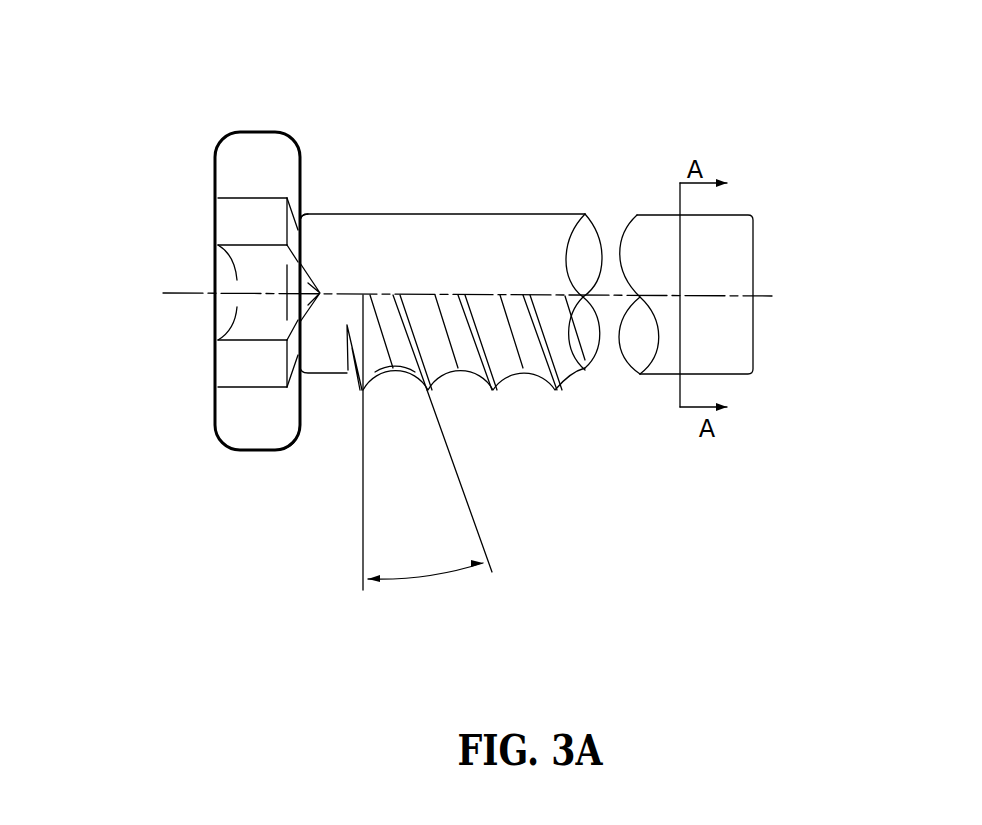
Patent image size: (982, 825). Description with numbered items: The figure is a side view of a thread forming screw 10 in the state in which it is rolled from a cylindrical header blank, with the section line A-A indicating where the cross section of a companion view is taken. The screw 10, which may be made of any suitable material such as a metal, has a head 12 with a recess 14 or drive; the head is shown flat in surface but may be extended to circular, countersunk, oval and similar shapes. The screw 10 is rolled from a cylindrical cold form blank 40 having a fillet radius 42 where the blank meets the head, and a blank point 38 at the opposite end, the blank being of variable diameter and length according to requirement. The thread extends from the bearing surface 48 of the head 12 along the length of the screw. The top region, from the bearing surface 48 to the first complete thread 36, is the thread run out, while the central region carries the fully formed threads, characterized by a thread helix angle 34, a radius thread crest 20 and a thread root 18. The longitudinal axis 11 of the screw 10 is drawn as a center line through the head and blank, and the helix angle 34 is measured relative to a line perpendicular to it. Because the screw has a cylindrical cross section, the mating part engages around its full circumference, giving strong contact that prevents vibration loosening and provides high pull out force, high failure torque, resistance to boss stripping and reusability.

The thread forming screw 10 is at (408, 334).
The longitudinal axis 11 is at (165, 292).
The head 12 is at (188, 254).
The recess 14 is at (222, 372).
The thread root 18 is at (381, 380).
The radius thread crest 20 is at (495, 395).
The thread helix angle 34 is at (432, 582).
The first complete thread 36 is at (362, 392).
The blank point 38 is at (757, 240).
The cylindrical cold form blank 40 is at (444, 379).
The fillet radius 42 is at (305, 212).
The bearing surface 48 is at (309, 425).